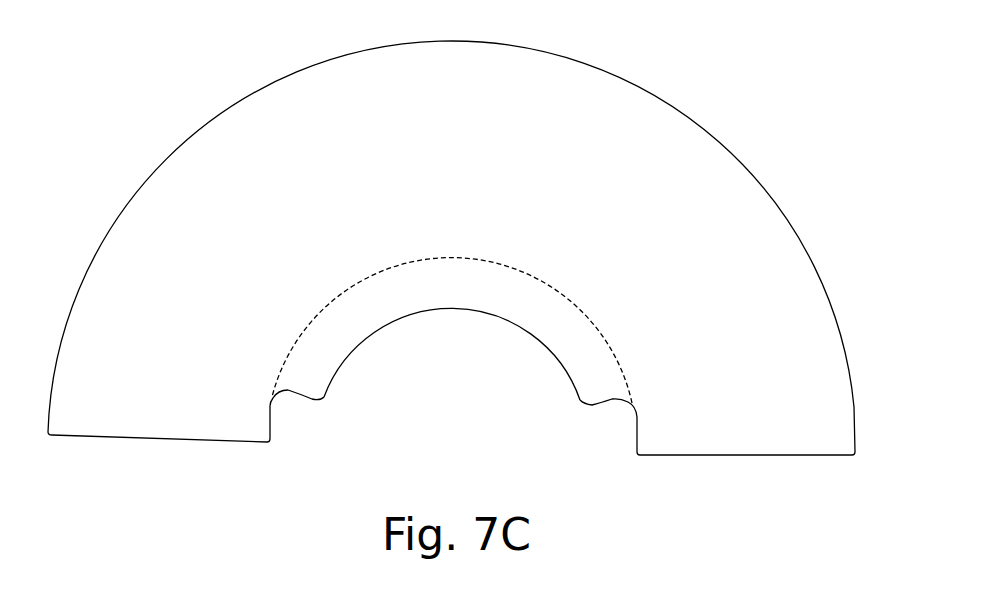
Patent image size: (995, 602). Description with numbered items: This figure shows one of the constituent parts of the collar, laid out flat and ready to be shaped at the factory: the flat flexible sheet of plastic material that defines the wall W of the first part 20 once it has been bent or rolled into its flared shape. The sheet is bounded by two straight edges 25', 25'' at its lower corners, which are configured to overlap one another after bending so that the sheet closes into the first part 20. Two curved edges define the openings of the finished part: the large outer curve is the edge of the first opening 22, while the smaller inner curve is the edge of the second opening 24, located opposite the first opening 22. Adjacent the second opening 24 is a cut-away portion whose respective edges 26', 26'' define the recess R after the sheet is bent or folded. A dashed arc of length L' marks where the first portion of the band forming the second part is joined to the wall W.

The first part 20 is at (252, 253).
The first opening 22 is at (162, 165).
The second opening 24 is at (530, 336).
The edge 25' is at (159, 461).
The edge 25'' is at (746, 470).
The edge of cut-away portion 26' is at (249, 360).
The edge of cut-away portion 26'' is at (660, 371).
The arc of length L' is at (452, 286).